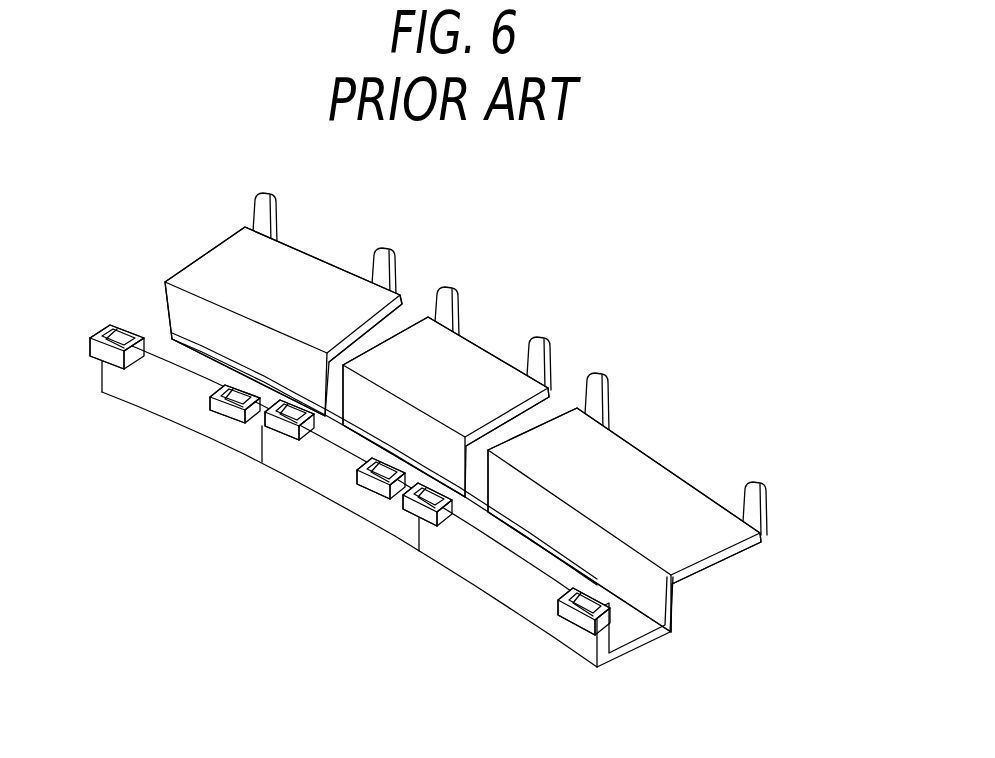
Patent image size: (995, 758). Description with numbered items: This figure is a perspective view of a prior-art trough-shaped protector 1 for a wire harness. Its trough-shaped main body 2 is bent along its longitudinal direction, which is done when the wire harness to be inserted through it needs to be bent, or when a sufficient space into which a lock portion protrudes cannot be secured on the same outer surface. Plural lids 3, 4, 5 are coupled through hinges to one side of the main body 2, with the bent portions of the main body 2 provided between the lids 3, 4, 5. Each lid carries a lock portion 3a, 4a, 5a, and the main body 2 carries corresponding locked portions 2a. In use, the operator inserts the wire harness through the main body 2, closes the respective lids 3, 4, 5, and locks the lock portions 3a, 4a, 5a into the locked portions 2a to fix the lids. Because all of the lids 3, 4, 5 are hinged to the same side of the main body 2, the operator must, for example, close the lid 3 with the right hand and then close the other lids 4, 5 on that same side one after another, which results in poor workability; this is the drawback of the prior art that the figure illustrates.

The electrical junction box assembly (prior art) 1 is at (132, 280).
The main body 2 is at (637, 650).
The locked portions 2a is at (220, 413).
The lid 3 is at (666, 462).
The lock portion 3a is at (757, 486).
The lid 4 is at (472, 340).
The lock portion 4a is at (537, 340).
The lid 5 is at (303, 253).
The lock portion 5a is at (381, 250).